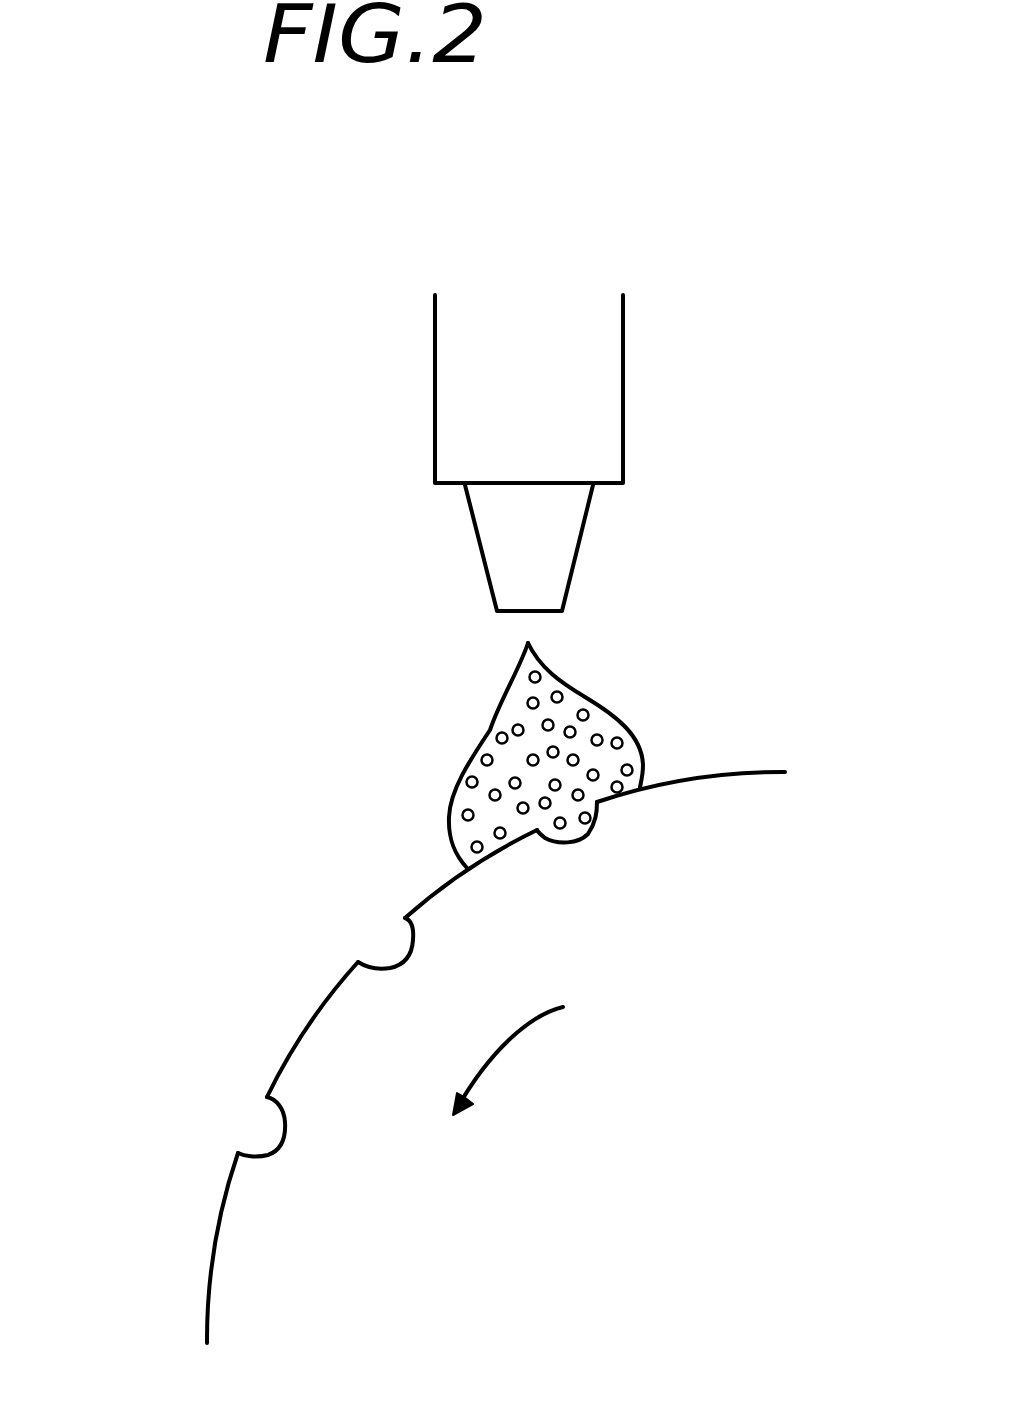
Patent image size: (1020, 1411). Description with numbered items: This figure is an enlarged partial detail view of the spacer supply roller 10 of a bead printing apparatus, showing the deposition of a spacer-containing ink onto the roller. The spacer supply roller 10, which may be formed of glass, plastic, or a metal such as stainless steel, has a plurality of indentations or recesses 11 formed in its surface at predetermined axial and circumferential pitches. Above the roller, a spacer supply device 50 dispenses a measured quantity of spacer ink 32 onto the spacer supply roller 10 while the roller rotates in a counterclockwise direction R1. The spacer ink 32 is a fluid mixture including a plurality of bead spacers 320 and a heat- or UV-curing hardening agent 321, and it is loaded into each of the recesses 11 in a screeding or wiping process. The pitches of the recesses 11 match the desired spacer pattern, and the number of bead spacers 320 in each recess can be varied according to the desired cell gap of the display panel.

The spacer supply roller 10 is at (280, 1240).
The recesses 11 is at (402, 958).
The spacer ink 32 is at (427, 755).
The bead spacers 320 is at (490, 732).
The hardening agent 321 is at (468, 797).
The spacer supply device 50 is at (623, 388).
The counterclockwise direction R1 is at (512, 1064).